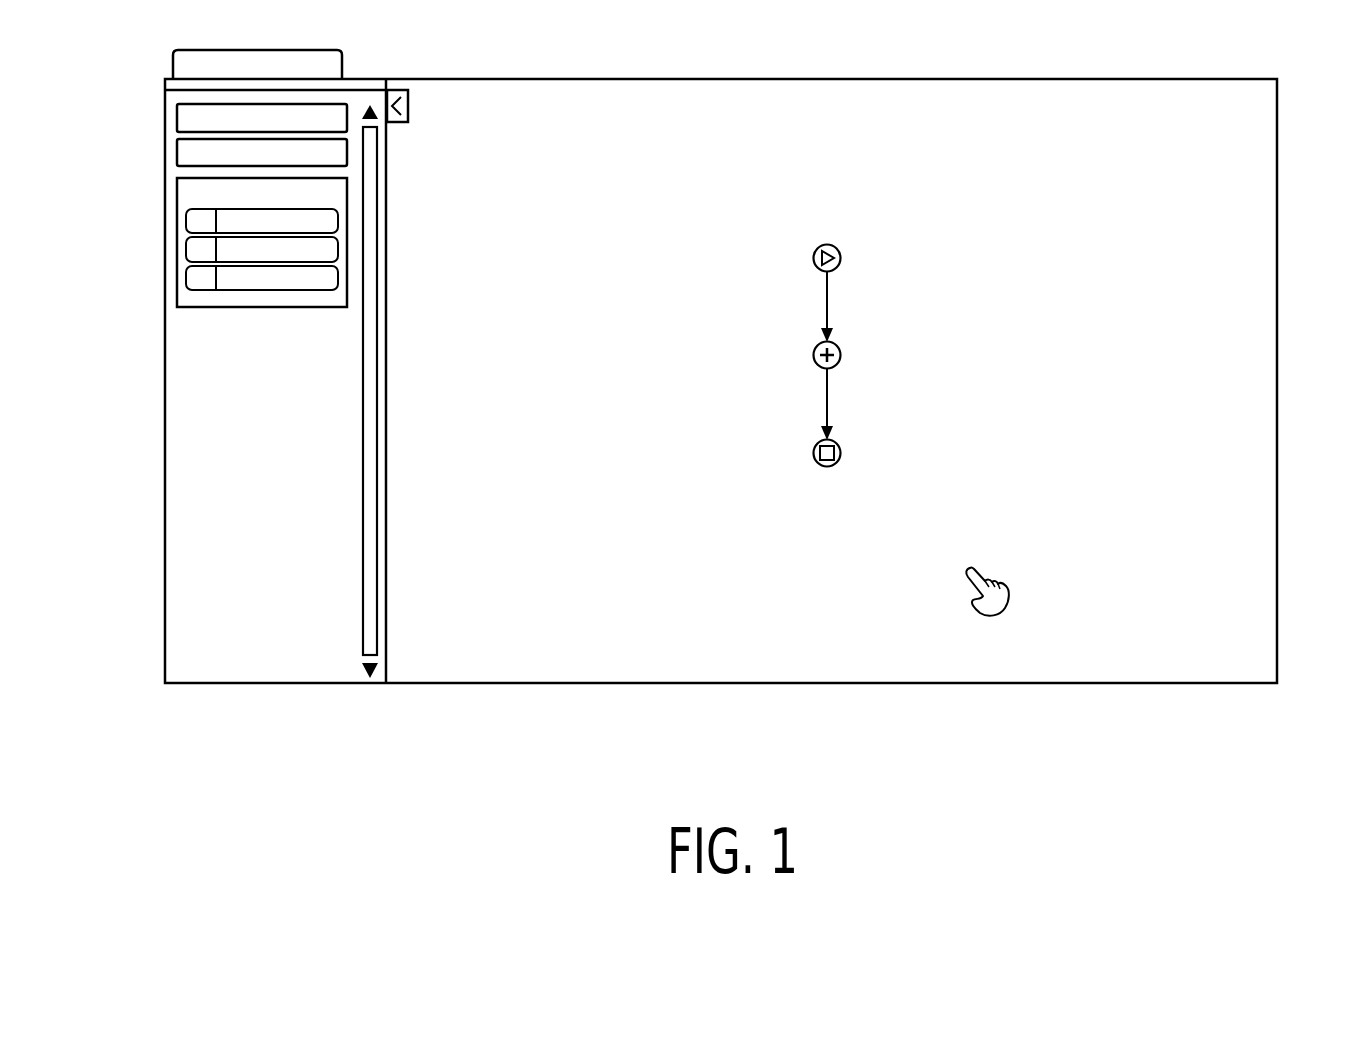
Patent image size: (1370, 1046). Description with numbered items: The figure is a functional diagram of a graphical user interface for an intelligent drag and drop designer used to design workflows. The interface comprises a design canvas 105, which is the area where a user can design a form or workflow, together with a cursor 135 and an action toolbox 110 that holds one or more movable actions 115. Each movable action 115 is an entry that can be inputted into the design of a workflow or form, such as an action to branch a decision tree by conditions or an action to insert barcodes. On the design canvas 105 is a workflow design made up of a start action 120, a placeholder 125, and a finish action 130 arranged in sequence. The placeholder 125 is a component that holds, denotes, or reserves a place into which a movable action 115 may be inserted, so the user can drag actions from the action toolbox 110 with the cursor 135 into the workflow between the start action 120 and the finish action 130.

The design canvas 105 is at (1249, 156).
The action toolbox 110 is at (177, 182).
The movable action 115 is at (197, 247).
The start action 120 is at (840, 247).
The placeholder 125 is at (843, 355).
The finish action 130 is at (843, 453).
The cursor 135 is at (1008, 585).